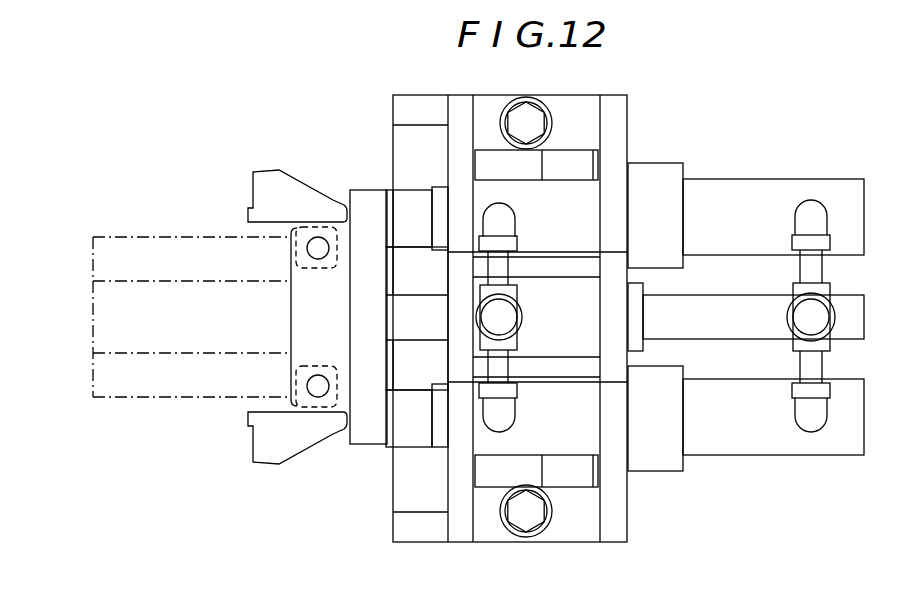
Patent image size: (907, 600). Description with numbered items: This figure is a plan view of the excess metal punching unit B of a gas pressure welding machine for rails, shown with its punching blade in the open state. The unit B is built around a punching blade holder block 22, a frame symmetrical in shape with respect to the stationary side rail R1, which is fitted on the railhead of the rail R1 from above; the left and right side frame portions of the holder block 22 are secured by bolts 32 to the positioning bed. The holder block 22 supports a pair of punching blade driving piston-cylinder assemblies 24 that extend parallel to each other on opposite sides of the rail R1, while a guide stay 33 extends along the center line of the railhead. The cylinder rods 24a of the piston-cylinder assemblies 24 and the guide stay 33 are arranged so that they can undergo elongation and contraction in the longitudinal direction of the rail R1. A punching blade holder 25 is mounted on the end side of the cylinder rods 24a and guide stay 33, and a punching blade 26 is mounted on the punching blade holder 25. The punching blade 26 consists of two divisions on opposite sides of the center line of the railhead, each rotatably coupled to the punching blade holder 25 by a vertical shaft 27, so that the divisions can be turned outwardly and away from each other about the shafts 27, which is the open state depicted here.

The excess metal punching unit B is at (370, 91).
The rail R1 is at (129, 238).
The punching blade holder block 22 is at (623, 128).
The punching blade driving piston-cylinder assembly 24 is at (764, 188).
The cylinder rod 24a is at (408, 203).
The punching blade holder 25 is at (367, 400).
The punching blade 26 is at (276, 182).
The vertical shaft 27 is at (314, 247).
The bolt 32 is at (526, 115).
The guide stay 33 is at (856, 302).